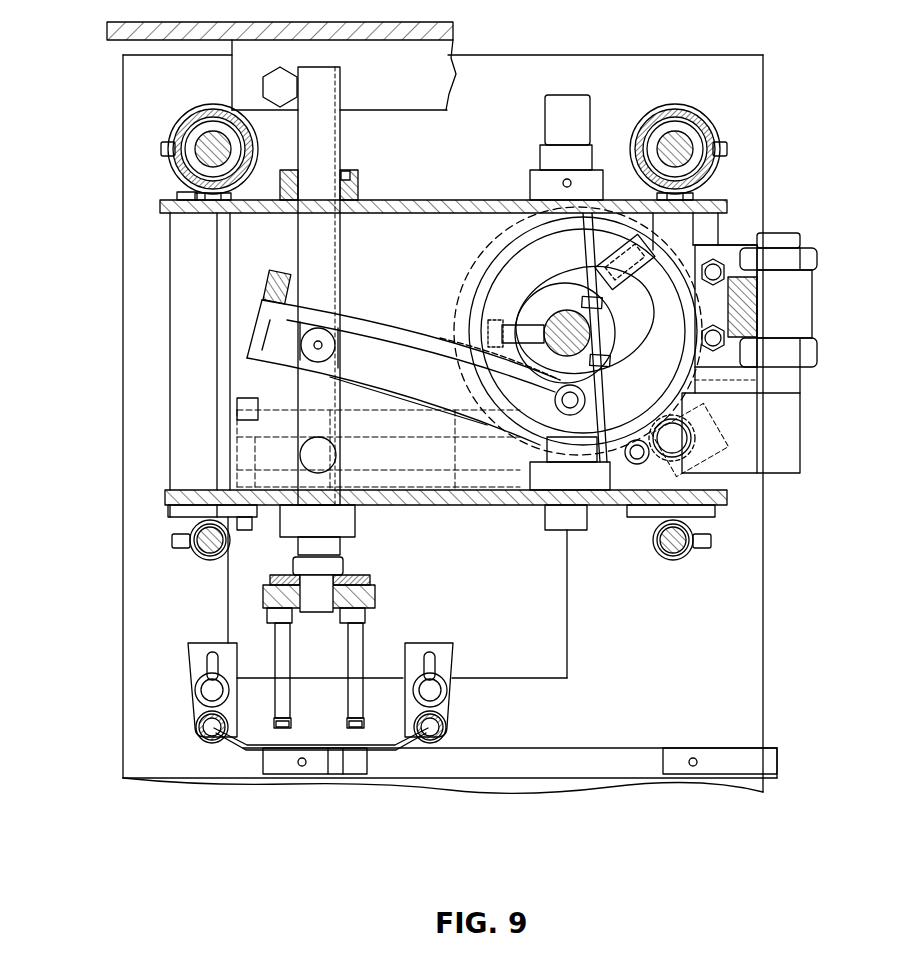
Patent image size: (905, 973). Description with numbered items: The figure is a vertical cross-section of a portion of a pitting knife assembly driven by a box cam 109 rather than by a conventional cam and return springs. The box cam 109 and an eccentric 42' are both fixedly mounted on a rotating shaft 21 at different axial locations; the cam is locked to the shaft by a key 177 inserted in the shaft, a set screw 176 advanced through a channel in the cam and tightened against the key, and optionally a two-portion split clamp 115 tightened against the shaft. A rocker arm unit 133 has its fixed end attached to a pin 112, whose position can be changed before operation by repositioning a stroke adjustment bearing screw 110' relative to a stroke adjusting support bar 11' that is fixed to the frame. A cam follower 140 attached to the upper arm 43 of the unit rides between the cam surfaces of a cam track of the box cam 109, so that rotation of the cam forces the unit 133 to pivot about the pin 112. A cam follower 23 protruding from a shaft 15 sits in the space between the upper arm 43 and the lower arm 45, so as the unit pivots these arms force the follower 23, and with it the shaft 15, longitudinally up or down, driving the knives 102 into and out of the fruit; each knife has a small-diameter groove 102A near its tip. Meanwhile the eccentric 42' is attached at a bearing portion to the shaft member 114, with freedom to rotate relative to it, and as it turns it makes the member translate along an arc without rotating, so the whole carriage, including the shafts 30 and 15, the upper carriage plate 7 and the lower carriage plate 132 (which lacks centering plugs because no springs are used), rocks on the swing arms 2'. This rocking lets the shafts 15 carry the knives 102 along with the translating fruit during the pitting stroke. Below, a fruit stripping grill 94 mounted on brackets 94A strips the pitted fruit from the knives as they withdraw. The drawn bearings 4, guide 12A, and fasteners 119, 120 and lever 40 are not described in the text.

The bearing 4 is at (196, 128).
The swing arm 2' is at (443, 180).
The shaft member 114 is at (557, 125).
The box cam 109 is at (528, 212).
The eccentric 42' is at (578, 299).
The carriage plate 7 is at (432, 202).
The rocker arm unit 133 is at (352, 302).
The shaft 21 is at (535, 300).
The key 177 is at (543, 322).
The set screw 176 is at (503, 326).
The upper arm 43 is at (440, 335).
The lever arm 40 is at (264, 330).
The cam follower 23 is at (378, 356).
The shaft 15 is at (316, 402).
The arm 45 is at (362, 388).
The cam follower 140 is at (540, 430).
The split clamp 115 is at (605, 337).
The pin 112 is at (683, 415).
The stroke adjusting support bar 11' is at (779, 300).
The stroke adjustment bearing screw 110' is at (774, 420).
The guide column 12A is at (136, 328).
The shaft 30 is at (190, 376).
The lower carriage plate 132 is at (443, 505).
The bolt 120 is at (192, 553).
The lower bearing 119 is at (206, 560).
The knife 102 is at (350, 662).
The groove 102A is at (365, 720).
The bracket 94A is at (196, 713).
The fruit stripping grill 94 is at (232, 742).